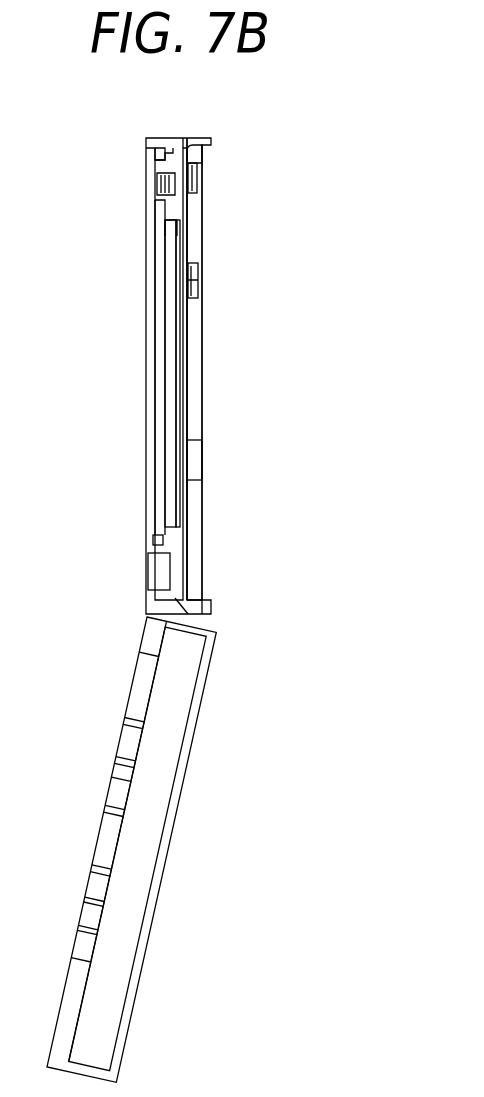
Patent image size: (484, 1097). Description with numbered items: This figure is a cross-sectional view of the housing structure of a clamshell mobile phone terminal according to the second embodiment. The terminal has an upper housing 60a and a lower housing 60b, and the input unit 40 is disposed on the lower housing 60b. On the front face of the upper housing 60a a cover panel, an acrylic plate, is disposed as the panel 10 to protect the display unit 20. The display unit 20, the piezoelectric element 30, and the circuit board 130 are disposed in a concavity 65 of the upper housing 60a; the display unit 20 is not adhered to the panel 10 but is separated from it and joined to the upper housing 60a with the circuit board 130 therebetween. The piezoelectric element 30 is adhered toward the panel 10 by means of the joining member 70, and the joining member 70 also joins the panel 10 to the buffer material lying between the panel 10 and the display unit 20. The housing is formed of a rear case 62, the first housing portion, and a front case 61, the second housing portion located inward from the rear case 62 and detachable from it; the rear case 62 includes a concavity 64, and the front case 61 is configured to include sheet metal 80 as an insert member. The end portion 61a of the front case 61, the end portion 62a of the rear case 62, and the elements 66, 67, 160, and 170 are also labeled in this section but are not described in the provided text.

The panel 10 is at (155, 245).
The display unit 20 is at (176, 352).
The piezoelectric element 30 is at (171, 205).
The input unit 40 is at (152, 573).
The upper housing 60a is at (184, 136).
The lower housing 60b is at (172, 832).
The front case 61 is at (165, 140).
The inclined surface of first case 61a is at (184, 610).
The rear case 62 is at (205, 365).
The end of second case 62a is at (206, 593).
The concavity 64 is at (198, 292).
The concavity 65 is at (204, 148).
The contact 66 is at (198, 188).
The support block 67 is at (197, 462).
The joining member 70 is at (155, 152).
The sheet metal 80 is at (167, 188).
The circuit board 130 is at (167, 318).
The holder 160 is at (199, 272).
The holder block 170 is at (199, 176).